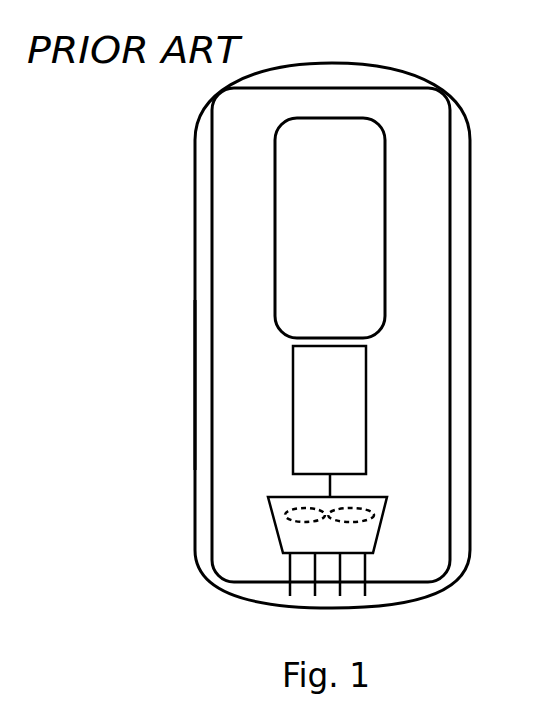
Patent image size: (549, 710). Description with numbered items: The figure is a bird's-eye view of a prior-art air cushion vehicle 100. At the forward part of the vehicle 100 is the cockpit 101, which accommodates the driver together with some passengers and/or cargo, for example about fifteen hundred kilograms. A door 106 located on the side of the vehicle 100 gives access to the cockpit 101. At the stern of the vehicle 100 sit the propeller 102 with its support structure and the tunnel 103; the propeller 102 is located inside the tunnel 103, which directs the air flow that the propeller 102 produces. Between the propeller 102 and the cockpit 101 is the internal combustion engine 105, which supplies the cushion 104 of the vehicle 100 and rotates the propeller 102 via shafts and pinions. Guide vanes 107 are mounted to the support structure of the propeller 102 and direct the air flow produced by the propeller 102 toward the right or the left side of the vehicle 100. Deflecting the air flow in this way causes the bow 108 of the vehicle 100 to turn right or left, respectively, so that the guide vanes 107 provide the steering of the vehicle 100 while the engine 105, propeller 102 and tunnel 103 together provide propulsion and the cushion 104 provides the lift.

The air cushion vehicle 100 is at (245, 138).
The cockpit 101 is at (325, 252).
The propeller 102 is at (300, 516).
The tunnel 103 is at (387, 497).
The cushion 104 is at (204, 398).
The internal combustion engine 105 is at (325, 427).
The door 106 is at (273, 245).
The guide vanes 107 is at (290, 590).
The bow 108 is at (325, 66).